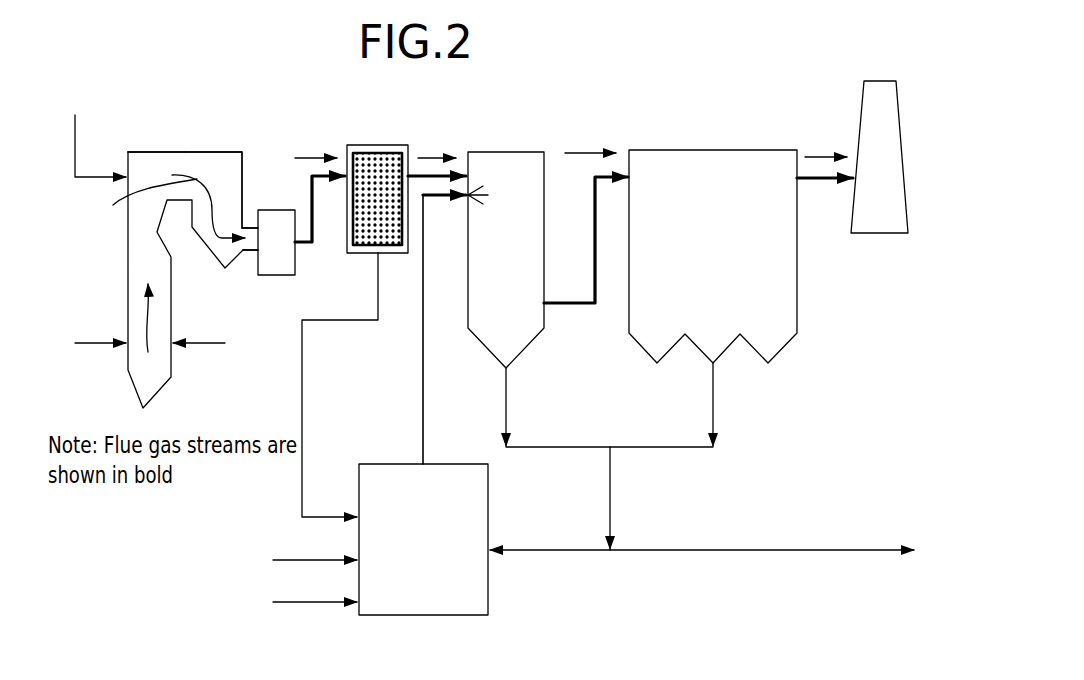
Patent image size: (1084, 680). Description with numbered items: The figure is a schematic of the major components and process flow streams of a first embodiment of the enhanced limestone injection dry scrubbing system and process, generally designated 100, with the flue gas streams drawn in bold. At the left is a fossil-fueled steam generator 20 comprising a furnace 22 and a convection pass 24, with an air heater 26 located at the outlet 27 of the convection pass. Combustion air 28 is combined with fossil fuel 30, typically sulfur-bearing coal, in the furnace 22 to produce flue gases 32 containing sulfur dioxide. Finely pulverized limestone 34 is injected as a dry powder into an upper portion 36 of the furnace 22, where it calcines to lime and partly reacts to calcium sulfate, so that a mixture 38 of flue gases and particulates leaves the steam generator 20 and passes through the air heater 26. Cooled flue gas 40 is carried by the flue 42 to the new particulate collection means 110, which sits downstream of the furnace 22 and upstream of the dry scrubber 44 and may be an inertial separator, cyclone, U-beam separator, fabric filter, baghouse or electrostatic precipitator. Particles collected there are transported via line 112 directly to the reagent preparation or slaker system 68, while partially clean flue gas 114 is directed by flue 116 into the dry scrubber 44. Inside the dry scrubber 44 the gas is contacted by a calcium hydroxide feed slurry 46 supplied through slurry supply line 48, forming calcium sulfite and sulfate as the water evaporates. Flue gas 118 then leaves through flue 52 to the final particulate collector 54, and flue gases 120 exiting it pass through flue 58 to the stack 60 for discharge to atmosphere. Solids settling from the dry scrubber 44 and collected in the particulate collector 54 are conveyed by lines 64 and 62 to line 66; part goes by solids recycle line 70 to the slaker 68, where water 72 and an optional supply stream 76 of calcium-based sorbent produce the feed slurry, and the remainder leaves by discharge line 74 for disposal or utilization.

The steam generator 20 is at (203, 100).
The furnace 22 is at (140, 274).
The convection pass 24 is at (208, 167).
The air heater 26 is at (273, 210).
The outlet 27 is at (245, 250).
The combustion air 28 is at (203, 345).
The fossil fuel 30 is at (95, 345).
The flue gases 32 is at (150, 320).
The limestone 34 is at (75, 180).
The upper portion of the furnace 36 is at (145, 160).
The mixture of flue gases and particulates 38 is at (147, 208).
The cooled flue gas 40 is at (313, 153).
The flue 42 is at (312, 228).
The dry scrubber 44 is at (520, 247).
The feed slurry 46 is at (477, 190).
The slurry supply line 48 is at (423, 365).
The flue 52 is at (577, 305).
The particulate collector 54 is at (667, 158).
The flue 58 is at (822, 182).
The stack 60 is at (868, 92).
The line 62 is at (713, 405).
The line 64 is at (508, 402).
The line 66 is at (610, 480).
The reagent preparation (slaker) system 68 is at (435, 470).
The solids recycle line 70 is at (572, 553).
The water 72 is at (305, 607).
The discharge line 74 is at (713, 553).
The supply stream of calcium-based sorbent 76 is at (303, 557).
The enhanced limestone injection dry scrubbing system 100 is at (549, 80).
The particulate collection means 110 is at (388, 233).
The line 112 is at (300, 382).
The partially clean flue gas 114 is at (437, 150).
The flue 116 is at (433, 177).
The flue gas 118 is at (583, 150).
The flue gases 120 is at (812, 145).